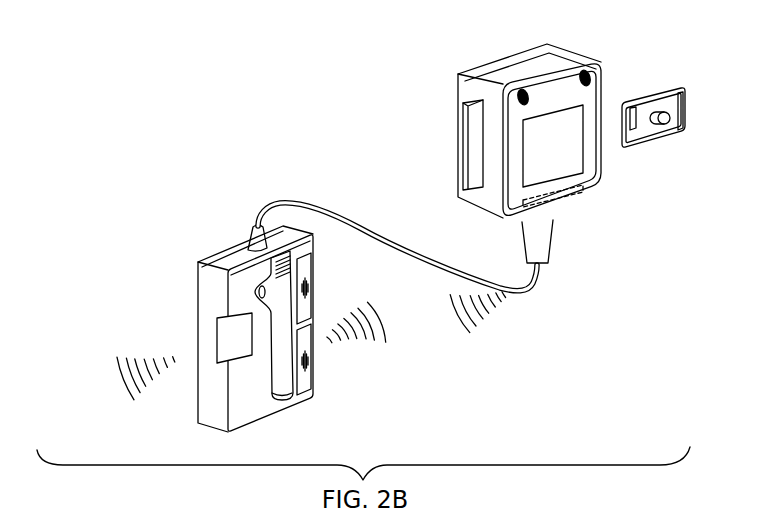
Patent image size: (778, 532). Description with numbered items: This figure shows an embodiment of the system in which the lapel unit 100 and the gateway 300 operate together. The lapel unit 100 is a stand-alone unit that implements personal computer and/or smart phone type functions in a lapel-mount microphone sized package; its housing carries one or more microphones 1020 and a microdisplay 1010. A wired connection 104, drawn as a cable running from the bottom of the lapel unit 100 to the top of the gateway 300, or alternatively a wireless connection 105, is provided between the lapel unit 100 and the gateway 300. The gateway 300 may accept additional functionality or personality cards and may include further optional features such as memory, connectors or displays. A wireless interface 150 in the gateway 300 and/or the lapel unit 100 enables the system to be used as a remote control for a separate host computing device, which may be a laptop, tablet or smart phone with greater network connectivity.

The gateway 300 is at (93, 170).
The lapel unit 100 is at (456, 76).
The microphone 1020 is at (591, 78).
The microdisplay 1010 is at (577, 157).
The wired connection 104 is at (297, 203).
The wireless interface 105 is at (383, 333).
The wireless interface 150 is at (123, 373).